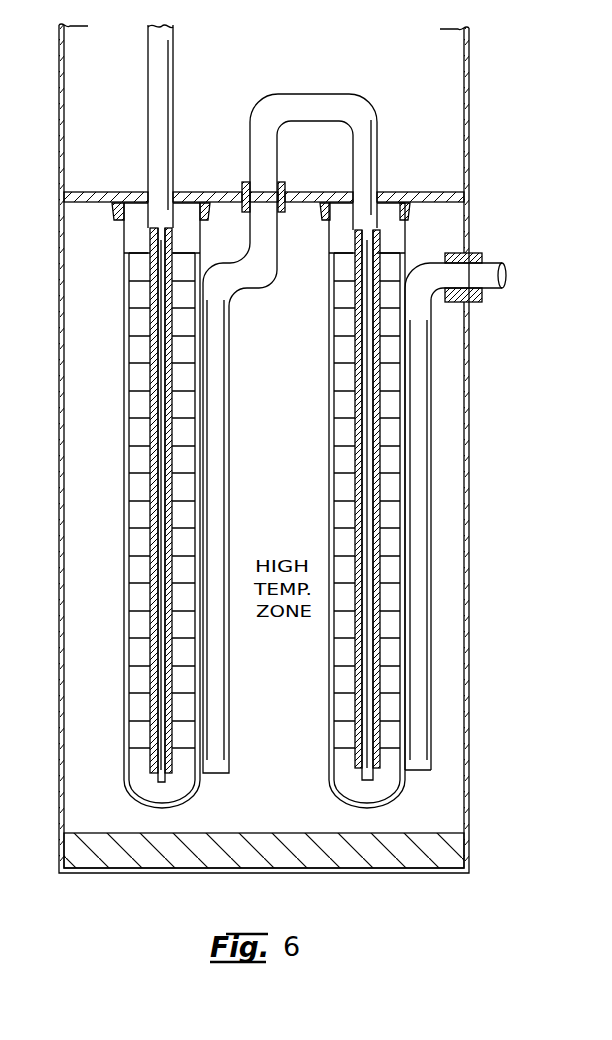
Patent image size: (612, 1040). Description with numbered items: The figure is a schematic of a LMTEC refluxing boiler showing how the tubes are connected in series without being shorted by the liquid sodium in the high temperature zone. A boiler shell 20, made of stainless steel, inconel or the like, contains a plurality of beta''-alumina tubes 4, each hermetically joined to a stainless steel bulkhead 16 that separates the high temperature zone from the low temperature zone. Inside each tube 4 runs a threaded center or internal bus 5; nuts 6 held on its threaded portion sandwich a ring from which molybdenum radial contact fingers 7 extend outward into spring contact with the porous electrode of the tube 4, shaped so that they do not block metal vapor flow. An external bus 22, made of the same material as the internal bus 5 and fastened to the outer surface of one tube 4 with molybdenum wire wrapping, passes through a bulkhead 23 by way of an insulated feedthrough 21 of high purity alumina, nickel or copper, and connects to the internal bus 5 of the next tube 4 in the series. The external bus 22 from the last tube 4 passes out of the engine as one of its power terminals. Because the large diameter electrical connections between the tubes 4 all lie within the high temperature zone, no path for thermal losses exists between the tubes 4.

The β''-alumina tube 4 is at (125, 495).
The center or internal bus 5 is at (158, 96).
The nuts 6 is at (150, 383).
The radial contact fingers 7 is at (143, 447).
The bulkhead 16 is at (388, 196).
The boiler shell 20 is at (473, 680).
The insulated feedthrough 21 is at (284, 183).
The external bus 22 is at (215, 435).
The bulkhead 23 is at (217, 189).